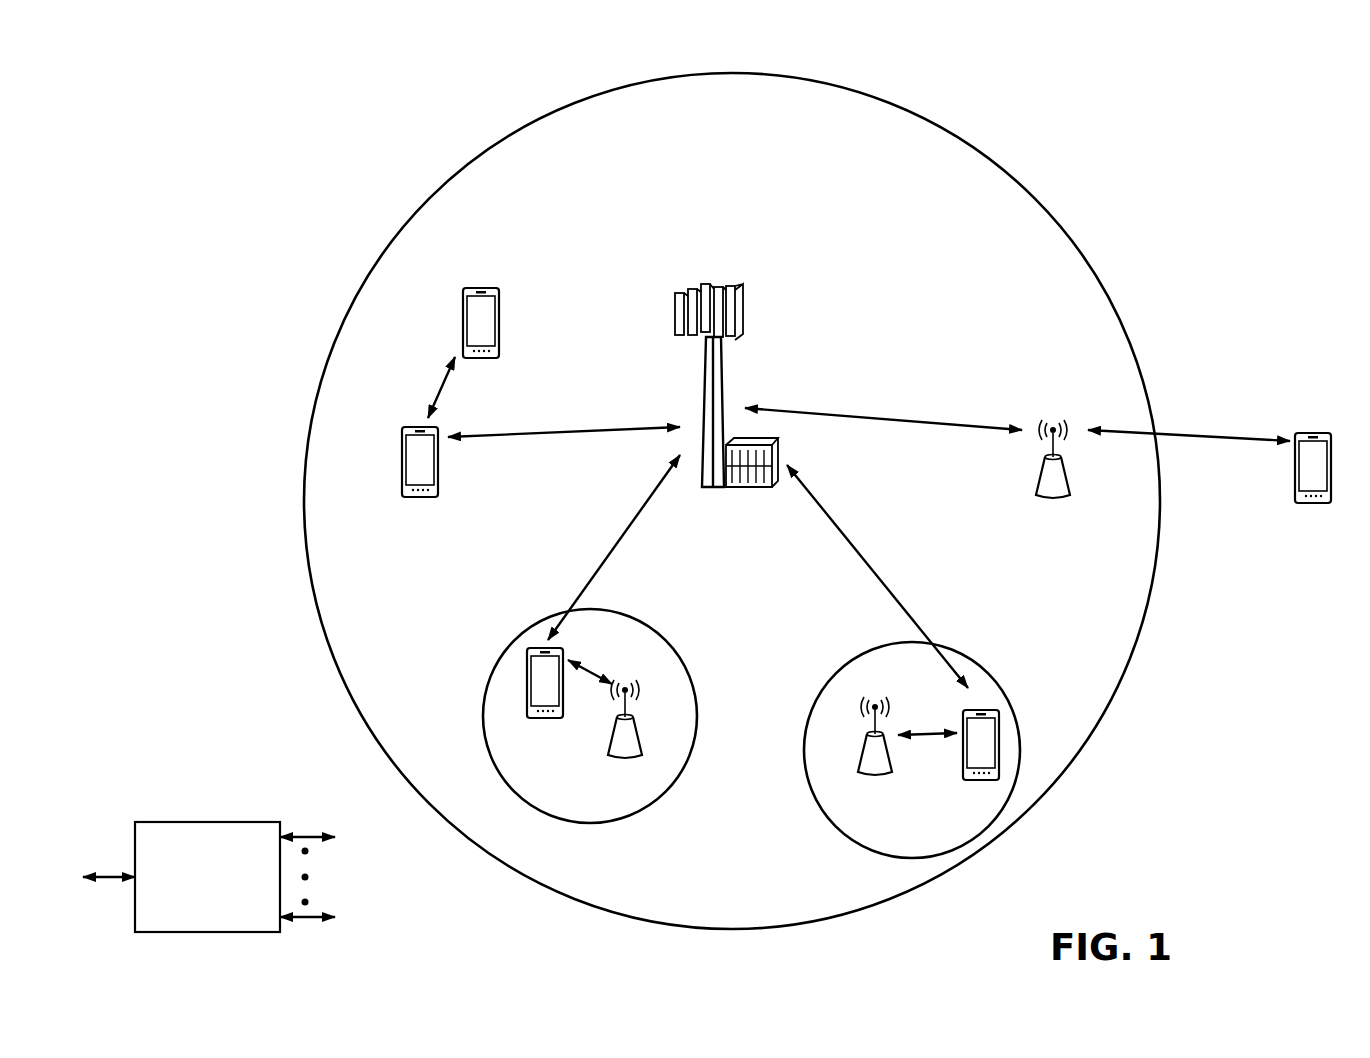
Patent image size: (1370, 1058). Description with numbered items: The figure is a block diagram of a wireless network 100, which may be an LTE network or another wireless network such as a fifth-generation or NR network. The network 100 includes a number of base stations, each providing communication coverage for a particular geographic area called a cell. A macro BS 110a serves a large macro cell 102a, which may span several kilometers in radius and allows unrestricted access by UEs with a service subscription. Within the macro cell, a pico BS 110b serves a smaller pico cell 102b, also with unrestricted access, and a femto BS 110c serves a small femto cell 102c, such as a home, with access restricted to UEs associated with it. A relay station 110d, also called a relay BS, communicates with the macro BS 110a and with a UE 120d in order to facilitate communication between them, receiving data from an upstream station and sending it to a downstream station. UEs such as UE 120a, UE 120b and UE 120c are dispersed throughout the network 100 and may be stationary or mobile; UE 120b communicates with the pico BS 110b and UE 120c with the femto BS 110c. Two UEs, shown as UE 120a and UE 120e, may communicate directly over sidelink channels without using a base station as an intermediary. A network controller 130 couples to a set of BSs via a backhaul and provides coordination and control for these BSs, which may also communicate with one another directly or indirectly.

The wireless network 100 is at (190, 67).
The macro cell 102a is at (1020, 182).
The pico cell 102b is at (688, 652).
The femto cell 102c is at (850, 660).
The macro BS 110a is at (722, 276).
The pico BS 110b is at (648, 748).
The femto BS 110c is at (858, 764).
The relay station 110d is at (1057, 420).
The UE 120a is at (402, 462).
The UE 120b is at (532, 717).
The UE 120c is at (965, 778).
The UE 120d is at (1328, 432).
The UE 120e is at (463, 306).
The network controller 130 is at (207, 821).